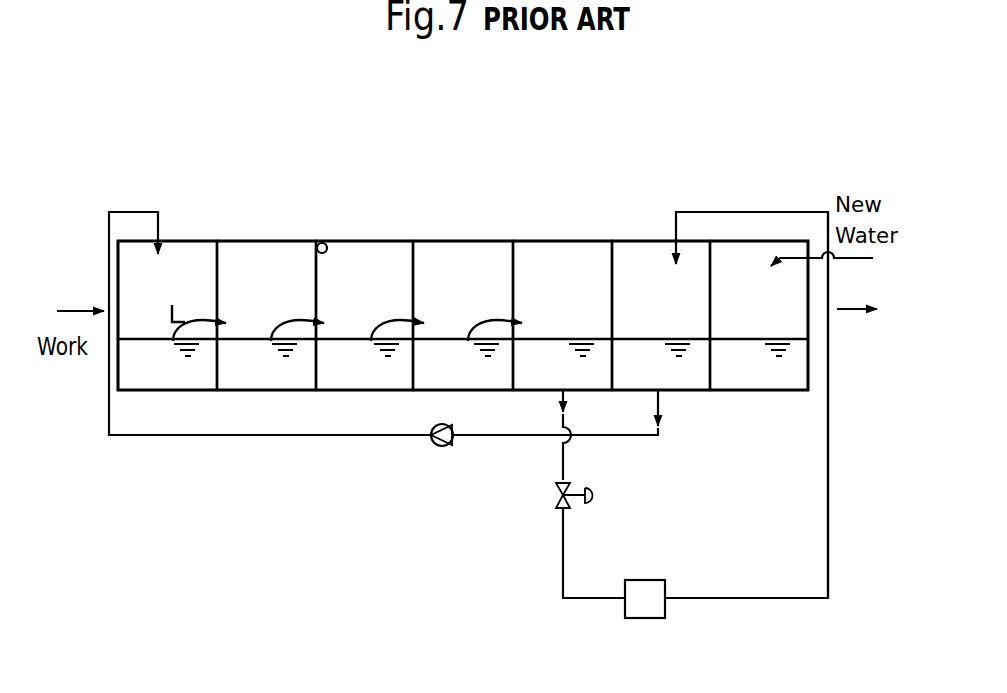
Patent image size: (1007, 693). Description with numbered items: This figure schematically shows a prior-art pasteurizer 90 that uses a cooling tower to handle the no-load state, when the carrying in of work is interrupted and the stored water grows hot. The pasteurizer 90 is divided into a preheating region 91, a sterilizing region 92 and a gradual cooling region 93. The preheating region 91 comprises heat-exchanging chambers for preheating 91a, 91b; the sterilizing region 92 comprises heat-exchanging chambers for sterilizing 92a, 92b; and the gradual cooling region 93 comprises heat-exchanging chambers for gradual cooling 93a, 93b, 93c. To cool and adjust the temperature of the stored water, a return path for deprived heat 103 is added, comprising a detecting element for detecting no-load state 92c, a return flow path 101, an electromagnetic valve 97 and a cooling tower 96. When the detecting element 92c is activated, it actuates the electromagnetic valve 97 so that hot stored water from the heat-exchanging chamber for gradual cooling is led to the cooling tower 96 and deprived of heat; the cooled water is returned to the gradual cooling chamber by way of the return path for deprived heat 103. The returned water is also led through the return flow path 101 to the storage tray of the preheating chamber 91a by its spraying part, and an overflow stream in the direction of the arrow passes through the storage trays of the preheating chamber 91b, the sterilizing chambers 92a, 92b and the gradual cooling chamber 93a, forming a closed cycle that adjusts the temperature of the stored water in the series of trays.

The pasteurizer 90 is at (715, 158).
The preheating region 91 is at (280, 197).
The heat-exchanging chamber for preheating 91a is at (172, 315).
The heat-exchanging chamber for preheating 91b is at (270, 315).
The sterilizing region 92 is at (483, 197).
The heat-exchanging chamber for sterilizing 92a is at (370, 315).
The heat-exchanging chamber for sterilizing 92b is at (467, 315).
The detecting element for detecting no-load state 92c is at (322, 242).
The gradual cooling region 93 is at (783, 197).
The heat-exchanging chamber for gradual cooling 93a is at (562, 315).
The heat-exchanging chamber for gradual cooling 93b is at (661, 315).
The heat-exchanging chamber for gradual cooling 93c is at (759, 315).
The cooling tower 96 is at (666, 617).
The electromagnetic valve 97 is at (586, 478).
The return flow path 101 is at (663, 423).
The return path for deprived heat 103 is at (829, 502).